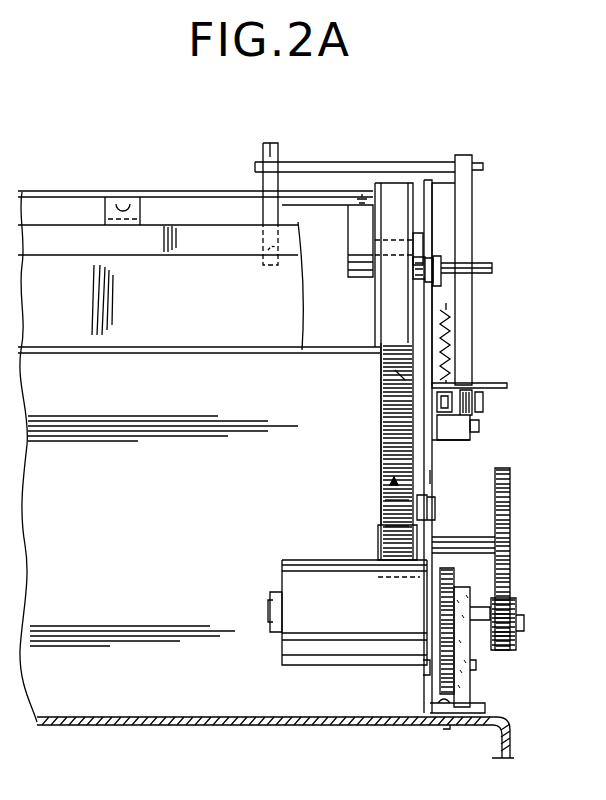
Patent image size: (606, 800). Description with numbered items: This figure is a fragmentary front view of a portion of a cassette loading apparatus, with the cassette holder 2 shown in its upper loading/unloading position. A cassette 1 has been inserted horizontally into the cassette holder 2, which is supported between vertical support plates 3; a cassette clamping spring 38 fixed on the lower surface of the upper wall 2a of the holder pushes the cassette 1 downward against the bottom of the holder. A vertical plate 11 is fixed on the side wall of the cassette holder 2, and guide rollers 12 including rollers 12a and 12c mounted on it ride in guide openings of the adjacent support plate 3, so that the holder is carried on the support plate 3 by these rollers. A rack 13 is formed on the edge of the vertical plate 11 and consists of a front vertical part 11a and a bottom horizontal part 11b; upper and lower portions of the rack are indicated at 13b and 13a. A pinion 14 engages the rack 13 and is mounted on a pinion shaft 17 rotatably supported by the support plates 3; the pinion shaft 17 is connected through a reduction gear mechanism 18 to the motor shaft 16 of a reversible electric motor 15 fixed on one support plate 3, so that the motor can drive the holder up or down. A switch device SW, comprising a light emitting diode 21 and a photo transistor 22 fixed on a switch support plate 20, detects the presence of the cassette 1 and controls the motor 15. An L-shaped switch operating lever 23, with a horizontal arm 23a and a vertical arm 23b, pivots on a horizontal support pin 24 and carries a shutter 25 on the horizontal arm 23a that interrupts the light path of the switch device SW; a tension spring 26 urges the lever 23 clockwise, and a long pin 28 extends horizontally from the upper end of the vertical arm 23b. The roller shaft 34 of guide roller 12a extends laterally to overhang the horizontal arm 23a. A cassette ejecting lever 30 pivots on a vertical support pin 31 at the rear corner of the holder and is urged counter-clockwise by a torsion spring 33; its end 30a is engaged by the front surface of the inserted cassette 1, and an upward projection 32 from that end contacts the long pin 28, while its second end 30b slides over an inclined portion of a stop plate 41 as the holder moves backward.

The cassette 1 is at (80, 330).
The cassette holder 2 is at (168, 348).
The upper wall 2a is at (70, 191).
The cassette clamping spring 38 is at (135, 212).
The long pin 28 is at (355, 163).
The upward projection 32 is at (272, 141).
The end of cassette ejecting lever 30a is at (274, 250).
The vertical support pin 31 is at (366, 196).
The cassette ejecting lever 30 is at (361, 232).
The torsion spring 33 is at (361, 279).
The second end of cassette ejecting lever 30b is at (424, 257).
The stop plate 41 is at (420, 240).
The guide roller 12a is at (441, 263).
The roller shaft 34 is at (482, 271).
The switch operating lever 23 is at (474, 328).
The vertical arm 23b is at (466, 291).
The horizontal arm 23a is at (466, 432).
The tension spring 26 is at (473, 369).
The switch support plate 20 is at (503, 389).
The horizontal support pin 24 is at (461, 396).
The shutter 25 is at (478, 405).
The light emitting diode 21 is at (480, 412).
The vertical plate 11 is at (378, 354).
The rack 13 is at (388, 463).
The rack lower portion 13a is at (408, 527).
The rack upper portion 13b is at (384, 366).
The photo transistor 22 is at (403, 372).
The switch device SW is at (392, 478).
The front vertical part 11a is at (388, 500).
The bottom horizontal part 11b is at (384, 527).
The pinion 14 is at (400, 530).
The electric motor 15 is at (306, 640).
The frame plate 12 is at (428, 446).
The guide roller 12c is at (434, 514).
The support plate 3 is at (431, 478).
The pinion shaft 17 is at (481, 549).
The reduction gear mechanism 18 is at (525, 613).
The motor shaft 16 is at (480, 622).